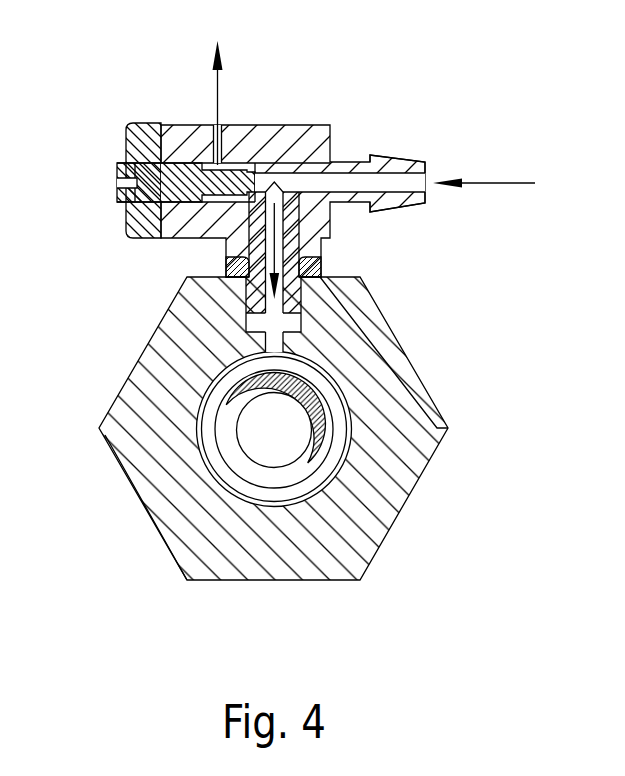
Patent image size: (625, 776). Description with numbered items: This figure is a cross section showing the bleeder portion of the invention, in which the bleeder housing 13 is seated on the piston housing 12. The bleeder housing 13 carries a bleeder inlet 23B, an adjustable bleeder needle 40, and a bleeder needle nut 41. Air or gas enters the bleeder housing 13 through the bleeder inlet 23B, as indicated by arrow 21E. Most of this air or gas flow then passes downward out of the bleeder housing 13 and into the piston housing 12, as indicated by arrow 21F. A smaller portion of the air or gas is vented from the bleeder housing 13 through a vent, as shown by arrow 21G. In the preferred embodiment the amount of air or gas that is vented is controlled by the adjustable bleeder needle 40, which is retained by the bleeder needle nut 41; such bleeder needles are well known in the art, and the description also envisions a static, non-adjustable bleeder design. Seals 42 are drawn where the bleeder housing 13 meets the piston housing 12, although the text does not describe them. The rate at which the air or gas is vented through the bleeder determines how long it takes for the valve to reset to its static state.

The piston housing 12 is at (407, 348).
The bleeder housing 13 is at (307, 125).
The bleeder needle 40 is at (116, 173).
The bleeder needle nut 41 is at (145, 123).
The O-ring seal 42 is at (322, 270).
The arrow 21E is at (502, 183).
The arrow 21F is at (276, 235).
The arrow 21G is at (218, 87).
The bleeder inlet 23B is at (395, 155).